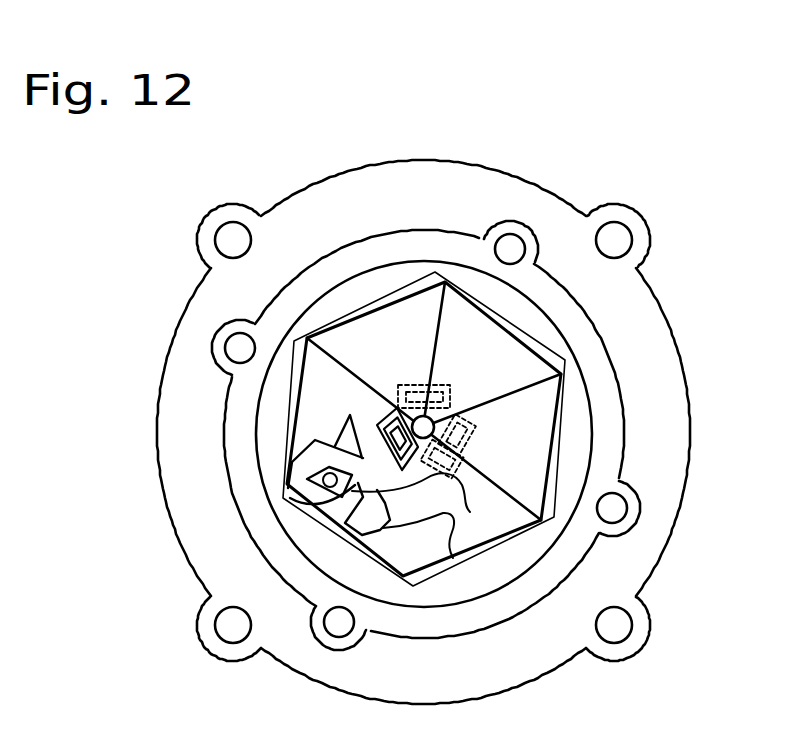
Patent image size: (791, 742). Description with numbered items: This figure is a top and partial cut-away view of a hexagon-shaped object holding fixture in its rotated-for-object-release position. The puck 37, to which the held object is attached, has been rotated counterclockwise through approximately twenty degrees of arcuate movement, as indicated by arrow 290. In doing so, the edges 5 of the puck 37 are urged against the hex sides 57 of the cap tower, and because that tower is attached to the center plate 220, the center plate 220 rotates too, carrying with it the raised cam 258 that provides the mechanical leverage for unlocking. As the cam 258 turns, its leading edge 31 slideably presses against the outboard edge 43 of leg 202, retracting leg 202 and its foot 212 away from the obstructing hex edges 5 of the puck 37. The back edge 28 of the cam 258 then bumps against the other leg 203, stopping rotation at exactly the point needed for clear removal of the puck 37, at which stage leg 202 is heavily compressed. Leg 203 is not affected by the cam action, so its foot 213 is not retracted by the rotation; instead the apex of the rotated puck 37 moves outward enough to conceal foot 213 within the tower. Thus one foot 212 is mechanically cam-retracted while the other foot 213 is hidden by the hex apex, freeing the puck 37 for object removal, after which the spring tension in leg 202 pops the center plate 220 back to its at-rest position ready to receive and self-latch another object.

The arrow 290 is at (207, 178).
The puck 37 is at (617, 377).
The edges 5 is at (557, 443).
The hex sides 57 is at (562, 488).
The center plate 220 is at (335, 443).
The cam 258 is at (318, 414).
The foot 213 is at (308, 470).
The back edge 28 is at (296, 500).
The leg 203 is at (356, 505).
The leading edge 31 is at (360, 430).
The outboard edge 43 is at (383, 410).
The leg 202 is at (468, 473).
The foot 212 is at (452, 517).